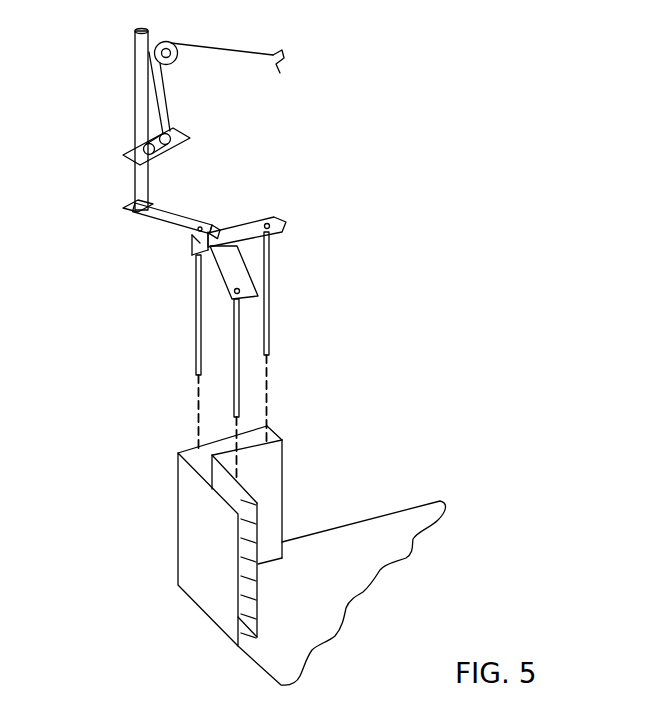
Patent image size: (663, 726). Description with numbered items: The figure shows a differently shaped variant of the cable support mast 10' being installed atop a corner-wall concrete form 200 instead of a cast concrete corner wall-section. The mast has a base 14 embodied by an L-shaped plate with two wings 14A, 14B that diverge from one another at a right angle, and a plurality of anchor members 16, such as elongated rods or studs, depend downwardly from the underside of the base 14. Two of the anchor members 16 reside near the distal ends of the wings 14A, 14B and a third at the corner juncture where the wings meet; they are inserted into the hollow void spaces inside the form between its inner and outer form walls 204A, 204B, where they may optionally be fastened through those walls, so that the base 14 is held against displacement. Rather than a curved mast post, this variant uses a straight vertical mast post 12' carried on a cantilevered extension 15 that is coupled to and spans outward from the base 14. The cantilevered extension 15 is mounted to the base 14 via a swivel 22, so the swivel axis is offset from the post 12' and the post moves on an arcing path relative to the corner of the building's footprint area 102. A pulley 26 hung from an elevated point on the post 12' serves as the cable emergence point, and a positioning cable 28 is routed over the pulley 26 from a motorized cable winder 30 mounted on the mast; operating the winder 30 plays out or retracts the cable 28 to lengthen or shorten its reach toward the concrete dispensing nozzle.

The cable support mast 10' is at (183, 255).
The straight vertical mast post 12' is at (113, 121).
The base 14 is at (282, 219).
The first wing 14A is at (238, 230).
The second wing 14B is at (230, 277).
The cantilevered extension 15 is at (173, 213).
The anchor members 16 is at (197, 320).
The swivel 22 is at (188, 252).
The pulley 26 is at (170, 66).
The positioning cable 28 is at (237, 57).
The motorized cable winder 30 is at (137, 159).
The footprint area 102 is at (358, 575).
The corner-wall concrete form 200 is at (172, 556).
The inner form wall 204A is at (272, 461).
The outer form wall 204B is at (207, 595).